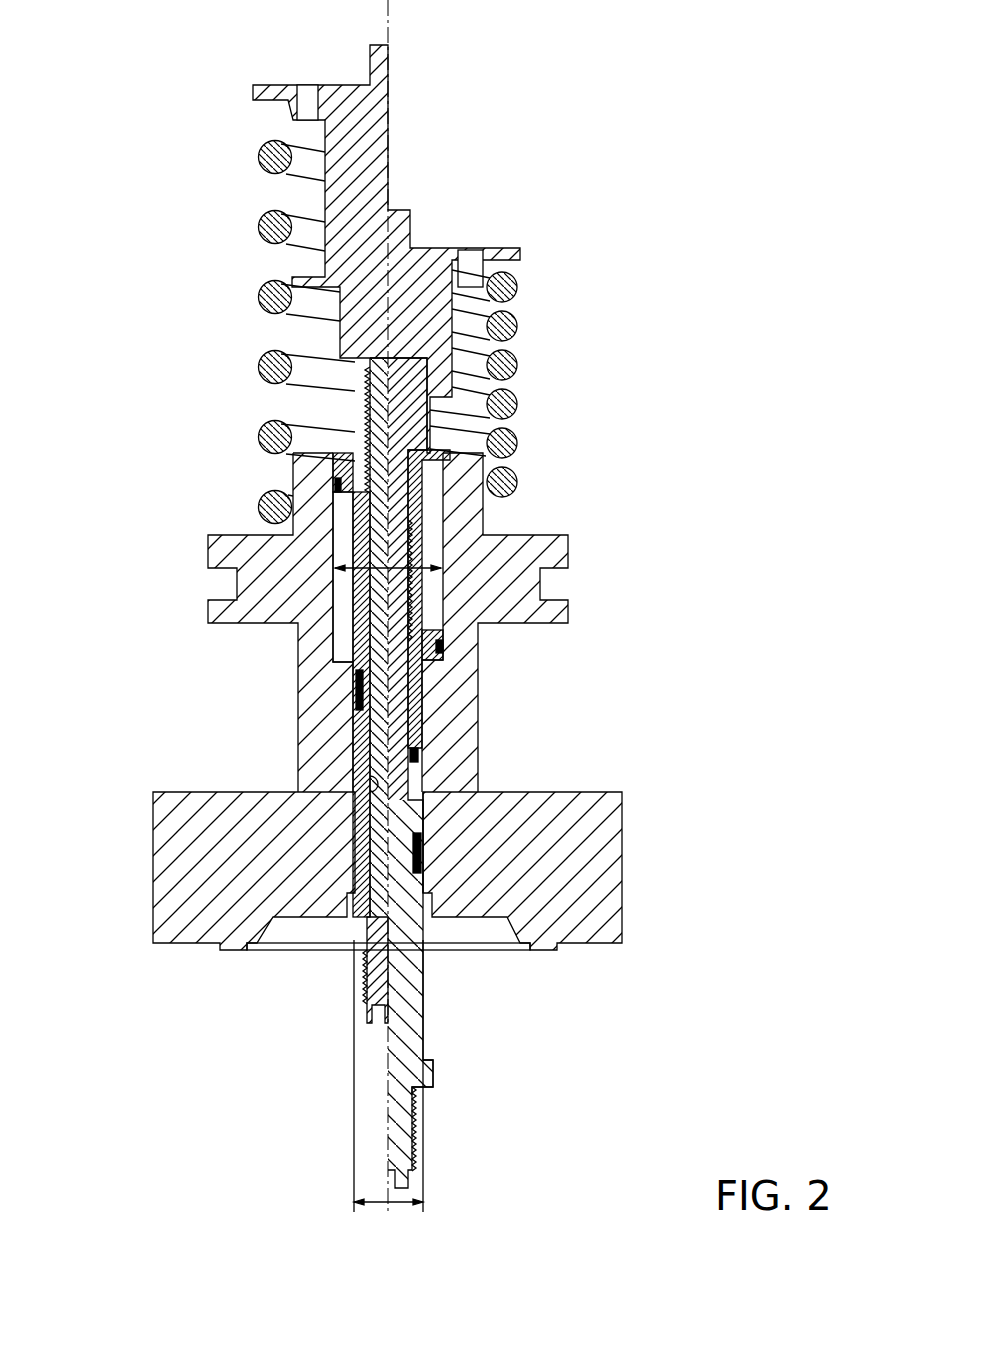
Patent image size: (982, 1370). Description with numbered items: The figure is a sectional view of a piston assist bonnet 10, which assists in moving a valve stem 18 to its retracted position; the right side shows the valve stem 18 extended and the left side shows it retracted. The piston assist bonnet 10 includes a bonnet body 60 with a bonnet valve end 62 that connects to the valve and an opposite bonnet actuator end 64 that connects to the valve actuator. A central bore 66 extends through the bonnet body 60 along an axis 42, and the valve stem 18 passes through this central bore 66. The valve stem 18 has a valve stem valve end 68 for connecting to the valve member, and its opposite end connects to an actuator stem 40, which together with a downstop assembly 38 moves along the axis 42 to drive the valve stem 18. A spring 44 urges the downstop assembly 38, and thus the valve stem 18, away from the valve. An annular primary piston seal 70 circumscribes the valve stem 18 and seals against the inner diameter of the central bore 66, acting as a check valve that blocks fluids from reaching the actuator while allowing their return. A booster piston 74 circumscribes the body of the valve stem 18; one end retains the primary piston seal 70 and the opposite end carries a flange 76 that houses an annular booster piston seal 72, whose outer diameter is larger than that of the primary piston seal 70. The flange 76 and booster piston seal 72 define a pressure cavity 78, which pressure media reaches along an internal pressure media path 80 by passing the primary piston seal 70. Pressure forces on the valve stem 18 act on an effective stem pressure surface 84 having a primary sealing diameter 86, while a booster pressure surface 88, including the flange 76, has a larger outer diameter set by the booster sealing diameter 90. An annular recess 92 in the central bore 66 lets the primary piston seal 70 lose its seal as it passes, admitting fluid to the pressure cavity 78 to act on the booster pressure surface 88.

The piston assist bonnet 10 is at (659, 642).
The valve stem 18 is at (410, 1037).
The downstop assembly 38 is at (199, 201).
The actuator stem 40 is at (357, 347).
The axis 42 is at (390, 22).
The spring 44 is at (518, 320).
The bonnet body 60 is at (456, 745).
The bonnet valve end 62 is at (657, 837).
The bonnet actuator end 64 is at (175, 572).
The central bore 66 is at (372, 786).
The valve stem valve end 68 is at (463, 1137).
The primary piston seal 70 is at (418, 856).
The booster piston seal 72 is at (442, 648).
The booster piston 74 is at (418, 785).
The flange 76 is at (344, 442).
The pressure cavity 78 is at (345, 637).
The internal pressure media path 80 is at (427, 727).
The effective stem pressure surface 84 is at (420, 1099).
The primary sealing diameter 86 is at (385, 1200).
The booster pressure surface 88 is at (342, 480).
The booster sealing diameter 90 is at (432, 567).
The annular recess 92 is at (357, 730).